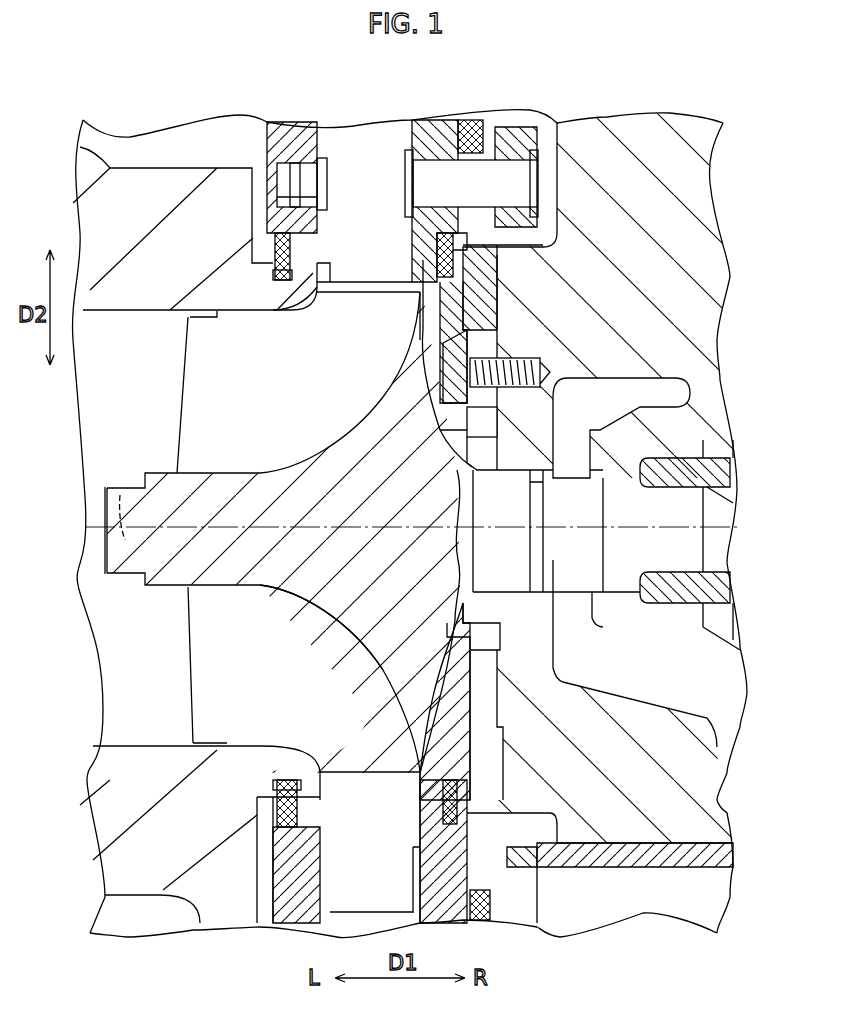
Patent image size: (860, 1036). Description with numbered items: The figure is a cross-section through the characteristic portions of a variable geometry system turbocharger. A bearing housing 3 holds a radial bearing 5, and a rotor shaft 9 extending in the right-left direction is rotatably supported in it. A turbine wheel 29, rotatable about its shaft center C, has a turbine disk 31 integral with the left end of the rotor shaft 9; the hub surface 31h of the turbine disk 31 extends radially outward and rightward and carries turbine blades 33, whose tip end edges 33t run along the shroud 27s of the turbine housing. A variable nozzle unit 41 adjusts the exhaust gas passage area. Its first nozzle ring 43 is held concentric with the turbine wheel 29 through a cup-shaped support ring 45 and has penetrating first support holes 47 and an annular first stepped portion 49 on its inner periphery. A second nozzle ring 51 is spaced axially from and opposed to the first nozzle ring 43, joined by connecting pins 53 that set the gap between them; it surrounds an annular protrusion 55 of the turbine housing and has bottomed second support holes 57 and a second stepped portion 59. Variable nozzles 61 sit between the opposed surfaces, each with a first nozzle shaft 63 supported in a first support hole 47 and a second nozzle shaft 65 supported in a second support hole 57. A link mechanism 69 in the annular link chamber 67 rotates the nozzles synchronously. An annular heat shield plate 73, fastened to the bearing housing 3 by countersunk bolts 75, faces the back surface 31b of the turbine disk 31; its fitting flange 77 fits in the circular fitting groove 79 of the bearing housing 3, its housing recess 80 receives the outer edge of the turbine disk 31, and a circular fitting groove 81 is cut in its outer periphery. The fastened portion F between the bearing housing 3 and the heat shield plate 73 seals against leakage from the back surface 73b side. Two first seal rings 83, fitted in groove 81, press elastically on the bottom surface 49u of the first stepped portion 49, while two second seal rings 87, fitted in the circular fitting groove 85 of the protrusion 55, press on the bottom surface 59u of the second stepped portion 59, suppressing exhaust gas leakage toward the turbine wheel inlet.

The bearing housing 3 is at (580, 118).
The radial bearing 5 is at (660, 603).
The rotor shaft 9 is at (712, 607).
The shroud 27s is at (217, 316).
The turbine wheel 29 is at (180, 408).
The turbine disk 31 is at (157, 585).
The back surface 31b is at (455, 650).
The hub surface 31h is at (255, 590).
The turbine blade 33 is at (277, 420).
The tip end edge 33t is at (240, 305).
The variable nozzle unit 41 is at (236, 150).
The first nozzle ring 43 is at (432, 122).
The support ring 45 is at (470, 120).
The first support hole 47 is at (413, 200).
The first stepped portion 49 is at (543, 248).
The bottom surface 49u is at (520, 830).
The second nozzle ring 51 is at (292, 125).
The connecting pin 53 is at (375, 912).
The protrusion 55 is at (317, 310).
The second support hole 57 is at (298, 195).
The second stepped portion 59 is at (280, 240).
The bottom surface 59u is at (272, 800).
The variable nozzle 61 is at (378, 173).
The first nozzle shaft 63 is at (495, 187).
The second nozzle shaft 65 is at (300, 170).
The link chamber 67 is at (546, 123).
The link mechanism 69 is at (508, 127).
The heat shield plate 73 is at (483, 332).
The back surface 73b is at (500, 757).
The countersunk bolt 75 is at (450, 367).
The fitting flange 77 is at (463, 432).
The circular fitting groove 79 is at (577, 437).
The housing recess 80 is at (420, 305).
The circular fitting groove 81 is at (497, 300).
The first seal ring 83 is at (453, 255).
The circular fitting groove 85 is at (287, 312).
The second seal ring 87 is at (280, 265).
The shaft center C is at (125, 500).
The fastened portion F is at (475, 690).